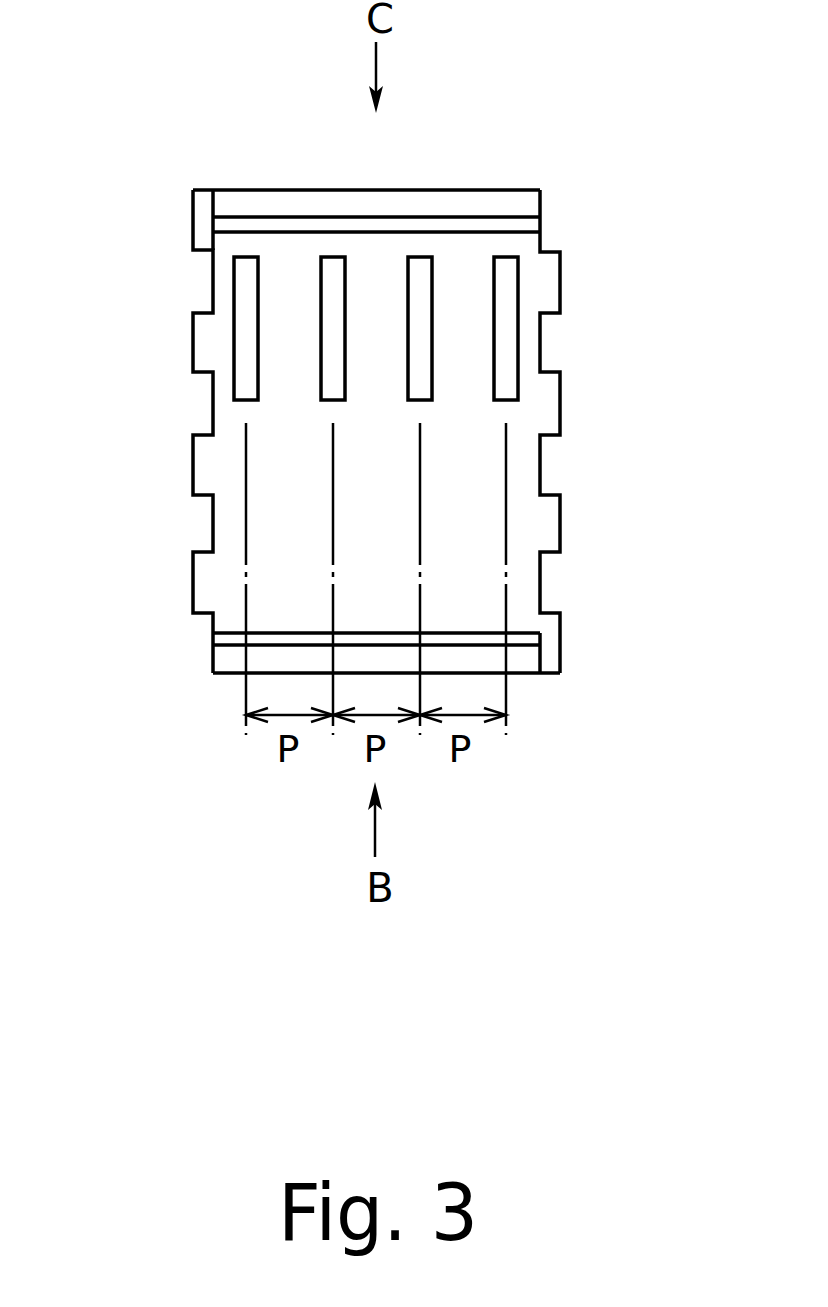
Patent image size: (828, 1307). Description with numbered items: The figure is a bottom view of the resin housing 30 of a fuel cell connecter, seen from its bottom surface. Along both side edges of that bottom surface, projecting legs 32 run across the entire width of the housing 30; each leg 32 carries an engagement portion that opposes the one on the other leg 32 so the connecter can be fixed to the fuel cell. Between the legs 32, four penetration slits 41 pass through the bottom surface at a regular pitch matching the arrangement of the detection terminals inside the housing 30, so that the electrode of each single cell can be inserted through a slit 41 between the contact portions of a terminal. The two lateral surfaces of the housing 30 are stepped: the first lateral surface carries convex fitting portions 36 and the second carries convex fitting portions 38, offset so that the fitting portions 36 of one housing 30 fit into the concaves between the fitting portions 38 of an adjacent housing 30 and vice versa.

The housing 30 is at (437, 1002).
The leg 32 is at (533, 208).
The convex fitting portion 36 is at (203, 343).
The convex fitting portion 38 is at (553, 408).
The penetration slit 41 is at (243, 268).